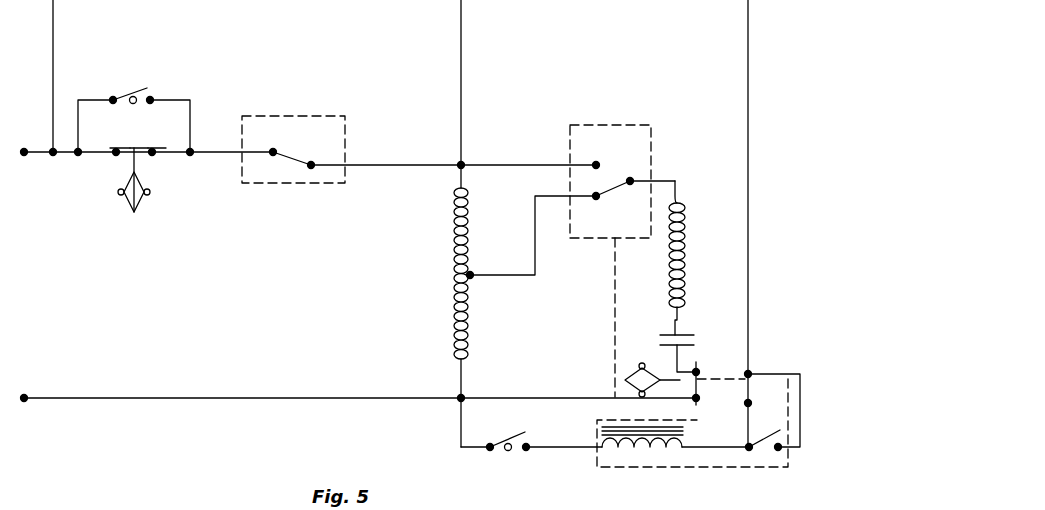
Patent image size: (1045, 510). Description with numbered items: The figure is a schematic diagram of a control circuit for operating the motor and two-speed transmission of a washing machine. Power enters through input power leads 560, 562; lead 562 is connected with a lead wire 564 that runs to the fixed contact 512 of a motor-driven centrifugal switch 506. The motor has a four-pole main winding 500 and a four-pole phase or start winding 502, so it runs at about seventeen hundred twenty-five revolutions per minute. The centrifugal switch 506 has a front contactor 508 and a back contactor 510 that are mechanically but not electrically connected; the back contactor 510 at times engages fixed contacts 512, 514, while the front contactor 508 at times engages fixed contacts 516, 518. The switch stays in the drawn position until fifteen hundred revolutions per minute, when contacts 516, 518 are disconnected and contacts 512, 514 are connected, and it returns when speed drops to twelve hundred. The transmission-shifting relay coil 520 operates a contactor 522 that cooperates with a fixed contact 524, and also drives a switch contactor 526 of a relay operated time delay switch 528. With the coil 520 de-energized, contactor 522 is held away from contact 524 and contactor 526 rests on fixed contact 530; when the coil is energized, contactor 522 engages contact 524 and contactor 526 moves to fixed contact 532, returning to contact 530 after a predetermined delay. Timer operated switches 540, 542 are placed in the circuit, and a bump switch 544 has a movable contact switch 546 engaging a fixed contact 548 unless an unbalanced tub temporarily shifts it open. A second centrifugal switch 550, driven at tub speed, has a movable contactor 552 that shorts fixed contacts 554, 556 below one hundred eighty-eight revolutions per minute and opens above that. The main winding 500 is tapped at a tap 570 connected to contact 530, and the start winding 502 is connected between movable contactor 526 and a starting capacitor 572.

The main winding 500 is at (472, 302).
The phase or start winding 502 is at (688, 262).
The centrifugal switch 506 is at (722, 365).
The front contactor 508 is at (697, 365).
The back contactor 510 is at (752, 372).
The fixed contact 512 is at (748, 100).
The fixed contact 514 is at (750, 404).
The fixed contact 516 is at (692, 362).
The fixed contact 518 is at (694, 399).
The relay coil 520 is at (630, 449).
The contactor 522 is at (757, 450).
The fixed contact 524 is at (777, 449).
The switch contactor 526 is at (604, 191).
The relay operated time delay switch 528 is at (603, 140).
The fixed contact 530 is at (596, 200).
The fixed contact 532 is at (596, 163).
The timer operated switch 540 is at (137, 93).
The timer operated switch 542 is at (497, 444).
The bump switch 544 is at (330, 133).
The movable contact switch 546 is at (292, 157).
The fixed contact 548 is at (313, 167).
The centrifugal switch 550 is at (147, 172).
The movable contactor 552 is at (136, 147).
The fixed contact 554 is at (156, 154).
The fixed contact 556 is at (117, 153).
The input power lead 560 is at (108, 397).
The input power lead 562 is at (41, 154).
The lead wire 564 is at (443, 0).
The tap 570 is at (471, 273).
The starting capacitor 572 is at (677, 333).